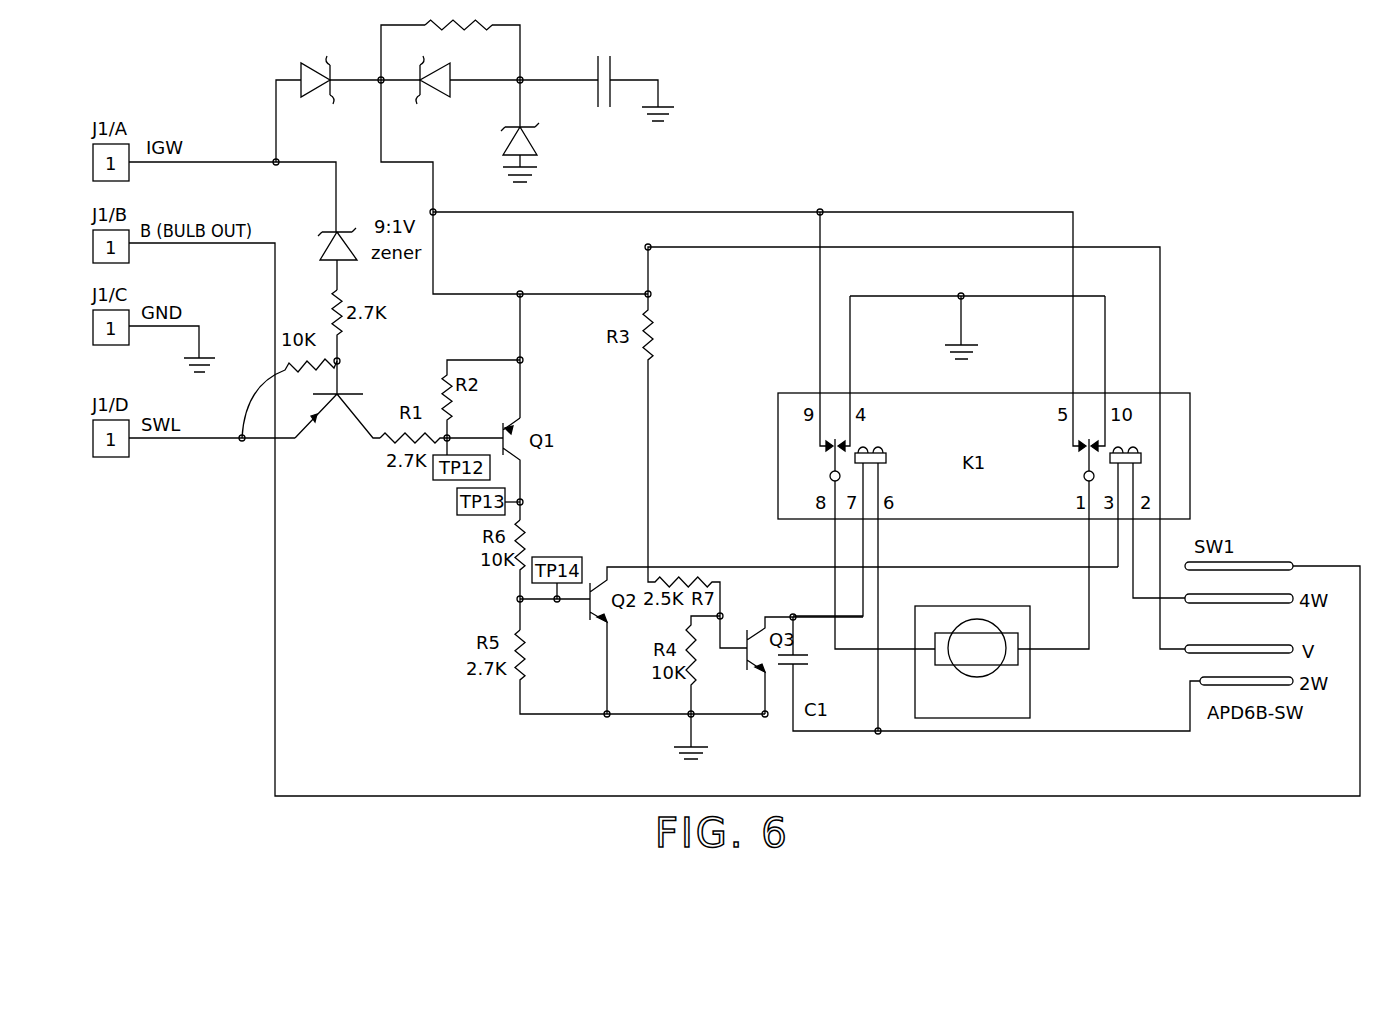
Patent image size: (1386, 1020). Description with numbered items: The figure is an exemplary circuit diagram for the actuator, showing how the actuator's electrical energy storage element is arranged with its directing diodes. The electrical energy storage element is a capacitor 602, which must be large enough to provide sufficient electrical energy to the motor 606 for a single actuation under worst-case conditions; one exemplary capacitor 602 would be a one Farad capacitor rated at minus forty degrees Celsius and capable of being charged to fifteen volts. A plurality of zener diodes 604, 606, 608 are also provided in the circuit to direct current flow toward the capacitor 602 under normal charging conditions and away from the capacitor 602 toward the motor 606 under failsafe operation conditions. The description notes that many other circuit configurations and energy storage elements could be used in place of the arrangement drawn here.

The capacitor 602 is at (613, 69).
The zener diode 604 is at (312, 63).
The zener diode 606 is at (443, 63).
The zener diode 608 is at (540, 149).